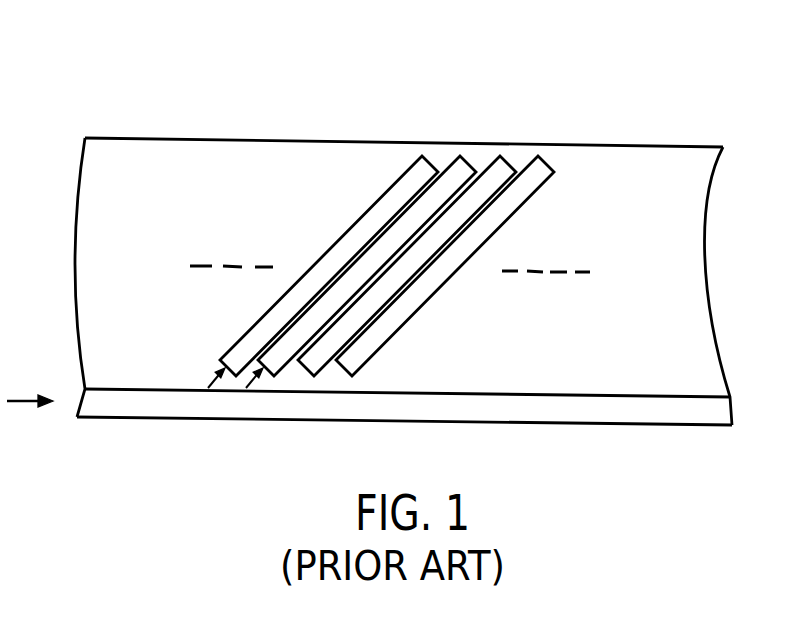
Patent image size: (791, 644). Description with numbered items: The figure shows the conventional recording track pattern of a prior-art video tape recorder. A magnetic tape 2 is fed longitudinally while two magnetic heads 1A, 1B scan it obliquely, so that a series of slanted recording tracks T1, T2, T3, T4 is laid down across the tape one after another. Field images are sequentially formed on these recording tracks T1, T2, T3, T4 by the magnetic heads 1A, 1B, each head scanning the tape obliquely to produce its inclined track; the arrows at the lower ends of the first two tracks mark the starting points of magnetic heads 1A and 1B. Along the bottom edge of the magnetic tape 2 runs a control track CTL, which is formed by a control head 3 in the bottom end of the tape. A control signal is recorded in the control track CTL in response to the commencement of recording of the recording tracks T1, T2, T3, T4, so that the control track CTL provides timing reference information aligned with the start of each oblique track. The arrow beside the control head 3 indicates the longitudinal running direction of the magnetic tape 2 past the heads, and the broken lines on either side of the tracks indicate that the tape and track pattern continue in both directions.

The magnetic tape 2 is at (147, 138).
The control track CTL is at (141, 421).
The recording track T1 is at (430, 164).
The recording track T2 is at (468, 164).
The recording track T3 is at (508, 164).
The recording track T4 is at (547, 165).
The magnetic head 1A is at (210, 382).
The magnetic head 1B is at (243, 382).
The control head 3 is at (26, 400).